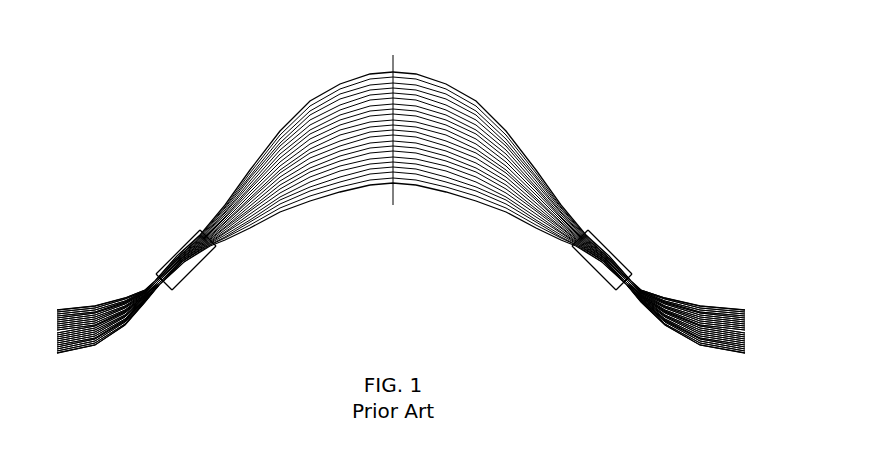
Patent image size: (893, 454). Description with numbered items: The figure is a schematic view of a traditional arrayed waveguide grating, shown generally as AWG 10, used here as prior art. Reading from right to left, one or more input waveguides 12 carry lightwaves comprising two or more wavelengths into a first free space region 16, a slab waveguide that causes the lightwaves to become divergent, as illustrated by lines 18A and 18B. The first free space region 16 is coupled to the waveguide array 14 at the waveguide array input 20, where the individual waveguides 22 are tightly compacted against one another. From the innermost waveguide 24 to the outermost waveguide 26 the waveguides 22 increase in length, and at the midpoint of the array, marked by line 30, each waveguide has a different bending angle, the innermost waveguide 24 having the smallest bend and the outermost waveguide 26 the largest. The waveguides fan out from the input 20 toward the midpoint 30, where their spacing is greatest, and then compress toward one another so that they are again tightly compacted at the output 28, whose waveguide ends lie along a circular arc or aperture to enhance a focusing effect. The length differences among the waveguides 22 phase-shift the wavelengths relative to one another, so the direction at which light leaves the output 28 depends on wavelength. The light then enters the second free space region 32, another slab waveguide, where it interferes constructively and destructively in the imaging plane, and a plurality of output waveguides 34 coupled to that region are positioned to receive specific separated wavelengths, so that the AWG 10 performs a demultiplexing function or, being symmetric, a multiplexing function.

The arrayed waveguide grating 10 is at (401, 208).
The input waveguides 12 is at (678, 297).
The waveguide array 14 is at (321, 203).
The first free space region 16 is at (585, 253).
The divergence line 18A is at (596, 235).
The divergence line 18B is at (584, 262).
The waveguide array input 20 is at (570, 253).
The waveguides 22 is at (565, 191).
The innermost waveguide 24 is at (396, 189).
The outermost waveguide 26 is at (336, 82).
The output 28 is at (200, 244).
The midpoint line 30 is at (396, 70).
The second free space region 32 is at (203, 270).
The output waveguides 34 is at (144, 328).